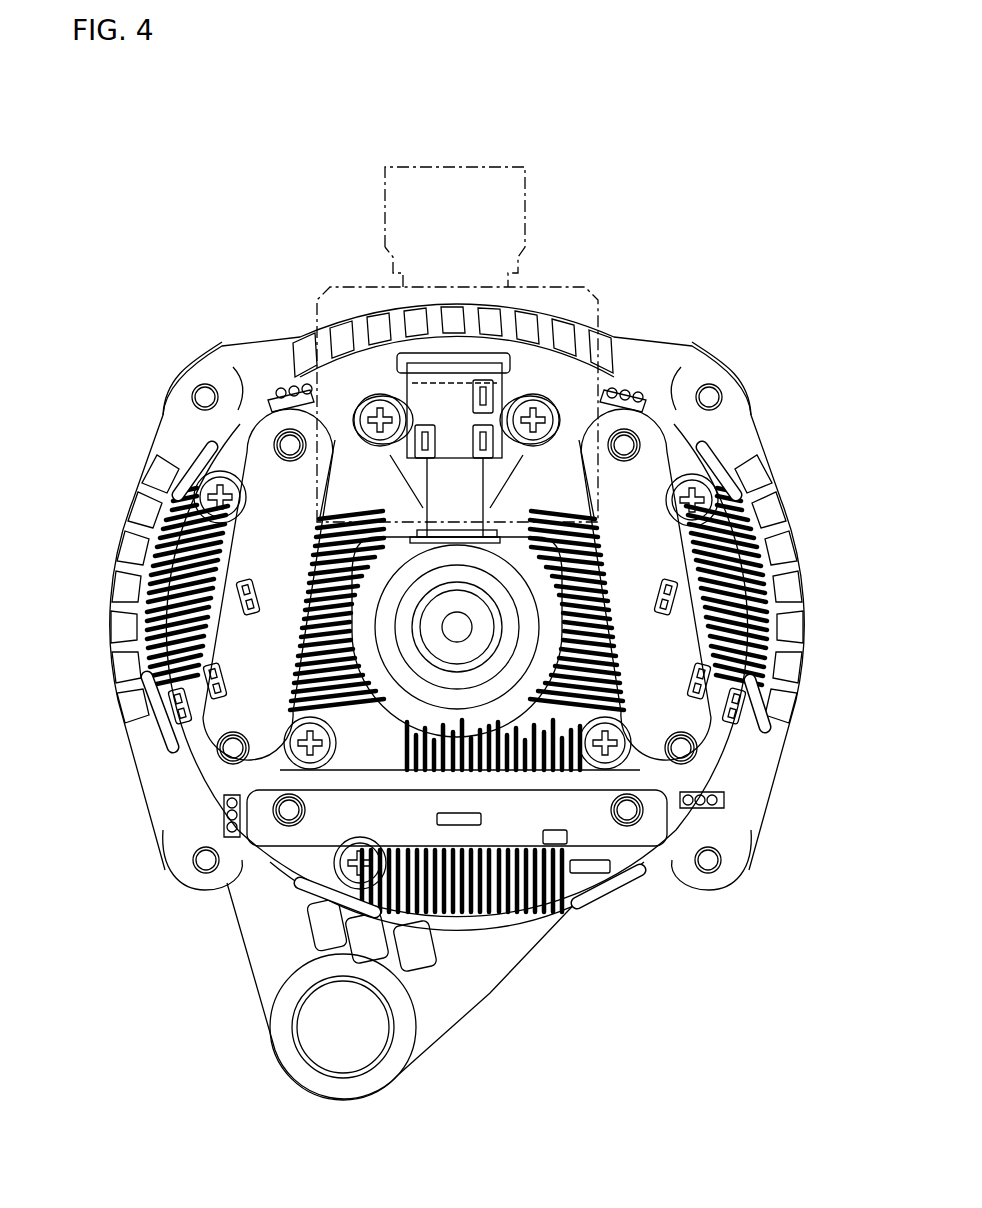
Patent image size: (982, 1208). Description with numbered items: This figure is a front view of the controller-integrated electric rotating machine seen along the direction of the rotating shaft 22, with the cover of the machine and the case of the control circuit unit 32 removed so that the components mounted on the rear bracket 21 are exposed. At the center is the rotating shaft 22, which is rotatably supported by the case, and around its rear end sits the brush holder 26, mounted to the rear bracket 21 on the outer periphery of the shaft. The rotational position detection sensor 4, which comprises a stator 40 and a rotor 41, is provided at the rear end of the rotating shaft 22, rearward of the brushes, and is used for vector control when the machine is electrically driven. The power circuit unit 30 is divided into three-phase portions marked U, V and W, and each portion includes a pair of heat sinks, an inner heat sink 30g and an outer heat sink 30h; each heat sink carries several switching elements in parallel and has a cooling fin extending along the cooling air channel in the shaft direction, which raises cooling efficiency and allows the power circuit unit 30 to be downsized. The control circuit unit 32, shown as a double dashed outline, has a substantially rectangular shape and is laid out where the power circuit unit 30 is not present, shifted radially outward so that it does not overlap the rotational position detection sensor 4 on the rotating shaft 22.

The rotational position detection sensor 4 is at (52, 515).
The rear bracket 21 is at (770, 457).
The rotating shaft 22 is at (768, 588).
The brush holder 26 is at (453, 407).
The power circuit unit 30 is at (210, 388).
The inner heat sink 30g is at (737, 490).
The outer heat sink 30h is at (683, 573).
The control circuit unit 32 is at (563, 289).
The stator 40 is at (340, 600).
The rotor 41 is at (265, 550).